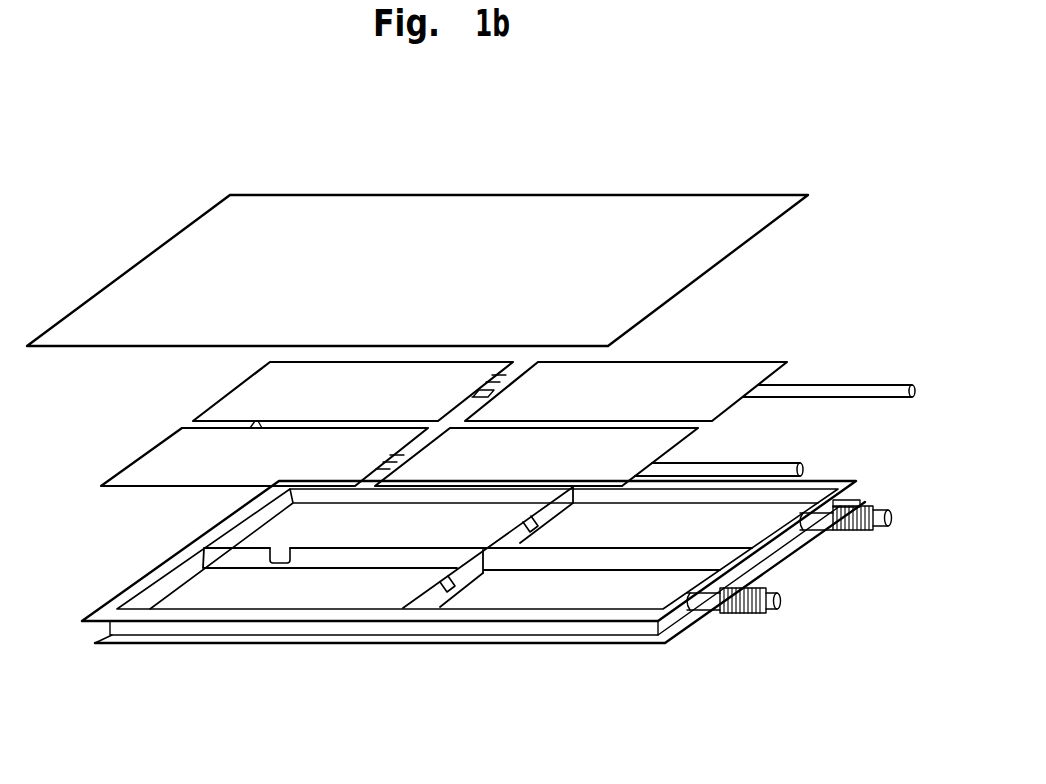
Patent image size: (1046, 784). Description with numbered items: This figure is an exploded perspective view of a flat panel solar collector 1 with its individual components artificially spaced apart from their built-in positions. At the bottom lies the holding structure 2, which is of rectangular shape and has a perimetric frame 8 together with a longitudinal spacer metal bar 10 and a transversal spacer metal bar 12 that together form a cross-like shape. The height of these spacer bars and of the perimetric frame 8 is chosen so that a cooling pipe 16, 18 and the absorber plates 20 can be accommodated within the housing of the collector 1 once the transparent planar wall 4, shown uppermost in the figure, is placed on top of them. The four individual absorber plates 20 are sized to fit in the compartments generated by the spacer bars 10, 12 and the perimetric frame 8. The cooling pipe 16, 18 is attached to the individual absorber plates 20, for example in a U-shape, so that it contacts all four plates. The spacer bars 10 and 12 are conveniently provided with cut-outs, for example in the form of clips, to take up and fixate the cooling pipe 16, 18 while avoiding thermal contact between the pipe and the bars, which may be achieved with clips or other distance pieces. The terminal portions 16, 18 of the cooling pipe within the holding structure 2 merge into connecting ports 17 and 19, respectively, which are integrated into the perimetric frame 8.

The flat panel solar collector 1 is at (515, 186).
The holding structure 2 is at (217, 613).
The cover plate 4 is at (686, 220).
The perimetric frame 8 is at (527, 630).
The longitudinal spacer metal bar 10 is at (206, 553).
The transversal spacer metal bar 12 is at (435, 598).
The cooling pipe 16 is at (868, 391).
The connecting port 17 is at (817, 521).
The cooling pipe 18 is at (776, 467).
The connecting port 19 is at (705, 604).
The absorber plates 20 is at (160, 462).